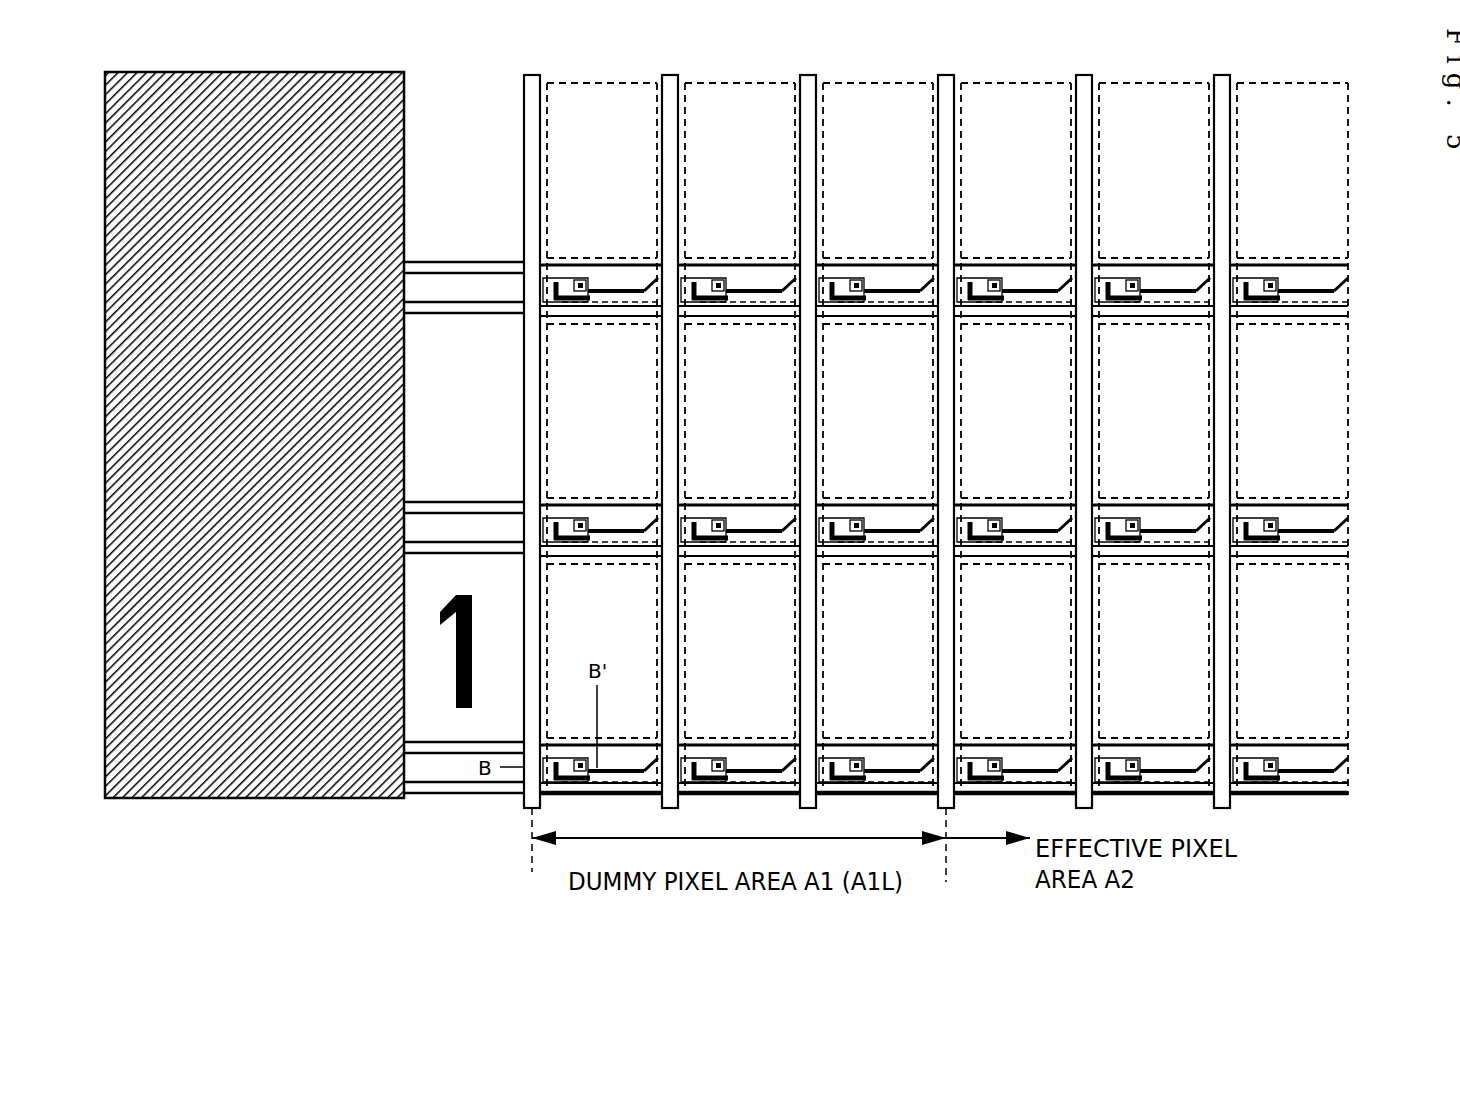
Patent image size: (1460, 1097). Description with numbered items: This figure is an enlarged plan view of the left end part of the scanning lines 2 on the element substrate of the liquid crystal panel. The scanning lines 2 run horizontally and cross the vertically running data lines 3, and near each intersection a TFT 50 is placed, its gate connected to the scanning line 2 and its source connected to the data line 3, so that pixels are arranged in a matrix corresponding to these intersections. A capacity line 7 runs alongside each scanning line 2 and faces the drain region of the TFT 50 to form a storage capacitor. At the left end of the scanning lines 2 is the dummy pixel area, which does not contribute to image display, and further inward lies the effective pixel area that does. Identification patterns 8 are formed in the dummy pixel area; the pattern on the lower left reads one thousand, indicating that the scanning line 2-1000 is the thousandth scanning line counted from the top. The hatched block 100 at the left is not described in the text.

The data line 3 is at (1224, 74).
The capacity line 7 is at (964, 515).
The scanning line 2 is at (964, 436).
The identification pattern 8 is at (572, 160).
The TFT 50 is at (1279, 262).
The driver circuit block 100 is at (213, 798).
The scanning line 2-1000 is at (1326, 800).